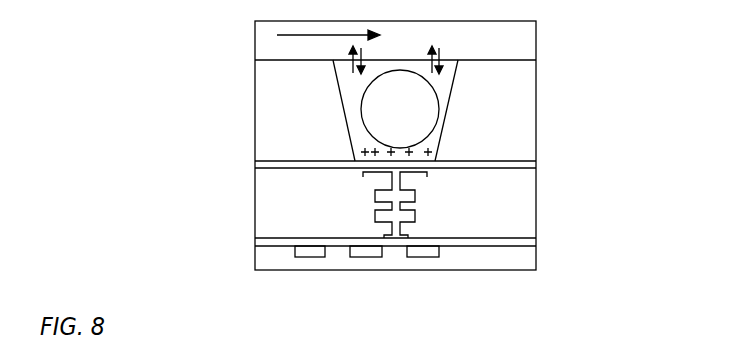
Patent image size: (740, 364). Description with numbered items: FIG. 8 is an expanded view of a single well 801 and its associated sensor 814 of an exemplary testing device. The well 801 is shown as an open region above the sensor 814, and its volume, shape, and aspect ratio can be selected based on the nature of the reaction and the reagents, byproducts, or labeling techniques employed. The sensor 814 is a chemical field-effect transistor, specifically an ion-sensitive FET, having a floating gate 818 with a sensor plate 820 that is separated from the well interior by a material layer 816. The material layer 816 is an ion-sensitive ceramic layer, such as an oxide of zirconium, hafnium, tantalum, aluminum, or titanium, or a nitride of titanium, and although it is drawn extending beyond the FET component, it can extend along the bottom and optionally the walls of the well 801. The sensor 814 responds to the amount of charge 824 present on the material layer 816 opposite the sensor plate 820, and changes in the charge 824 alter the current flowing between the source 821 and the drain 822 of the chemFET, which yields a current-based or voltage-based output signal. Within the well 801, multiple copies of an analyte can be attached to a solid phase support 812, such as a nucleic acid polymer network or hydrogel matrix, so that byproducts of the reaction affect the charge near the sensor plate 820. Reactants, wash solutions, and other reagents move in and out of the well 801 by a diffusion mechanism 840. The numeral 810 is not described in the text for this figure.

The well 801 is at (350, 86).
The substrate 810 is at (520, 130).
The solid phase support 812 is at (361, 112).
The sensor 814 is at (543, 160).
The material layer 816 is at (258, 161).
The floating gate 818 is at (360, 173).
The sensor plate 820 is at (427, 172).
The source 821 is at (426, 258).
The drain 822 is at (365, 258).
The charge 824 is at (363, 143).
The diffusion mechanism 840 is at (442, 55).